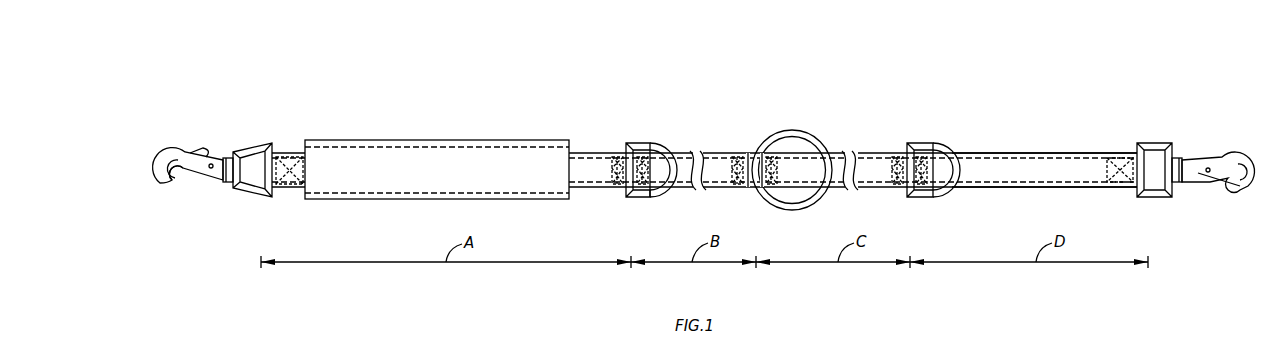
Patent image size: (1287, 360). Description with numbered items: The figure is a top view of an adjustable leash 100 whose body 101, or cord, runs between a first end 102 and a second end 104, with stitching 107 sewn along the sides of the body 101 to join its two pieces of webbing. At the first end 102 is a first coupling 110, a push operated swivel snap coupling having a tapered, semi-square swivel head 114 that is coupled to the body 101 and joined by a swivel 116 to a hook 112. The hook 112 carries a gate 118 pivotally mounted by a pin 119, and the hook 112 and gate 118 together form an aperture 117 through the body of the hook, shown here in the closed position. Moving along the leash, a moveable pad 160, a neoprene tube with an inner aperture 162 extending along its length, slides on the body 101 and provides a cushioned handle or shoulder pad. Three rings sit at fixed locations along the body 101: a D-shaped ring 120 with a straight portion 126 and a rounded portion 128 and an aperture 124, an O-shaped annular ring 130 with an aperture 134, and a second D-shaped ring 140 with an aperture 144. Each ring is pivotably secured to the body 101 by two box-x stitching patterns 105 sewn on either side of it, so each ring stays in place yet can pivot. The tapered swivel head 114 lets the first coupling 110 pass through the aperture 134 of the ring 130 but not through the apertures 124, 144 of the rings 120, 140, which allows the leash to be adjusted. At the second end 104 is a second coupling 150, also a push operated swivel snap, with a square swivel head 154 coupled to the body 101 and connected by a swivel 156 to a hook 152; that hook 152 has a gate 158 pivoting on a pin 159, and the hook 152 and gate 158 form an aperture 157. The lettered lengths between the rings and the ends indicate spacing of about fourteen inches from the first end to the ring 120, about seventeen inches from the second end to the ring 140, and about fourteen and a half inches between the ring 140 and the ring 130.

The adjustable leash 100 is at (1172, 62).
The body 101 is at (986, 197).
The first end 102 is at (270, 140).
The second end 104 is at (1140, 125).
The box-x stitching patterns 105 is at (291, 155).
The stitching 107 is at (1062, 152).
The first coupling 110 is at (234, 132).
The hook 112 is at (156, 186).
The tapered swivel head 114 is at (254, 197).
The swivel 116 is at (228, 184).
The aperture 117 is at (175, 165).
The gate 118 is at (205, 151).
The pin 119 is at (211, 163).
The ring 120 is at (641, 136).
The aperture 124 is at (656, 160).
The straight portion 126 is at (626, 190).
The rounded portion 128 is at (662, 191).
The ring 130 is at (791, 127).
The aperture 134 is at (790, 147).
The ring 140 is at (924, 136).
The aperture 144 is at (937, 160).
The second coupling 150 is at (1222, 135).
The hook 152 is at (1237, 156).
The square swivel head 154 is at (1155, 197).
The swivel 156 is at (1177, 157).
The aperture 157 is at (1218, 195).
The gate 158 is at (1236, 192).
The pin 159 is at (1196, 191).
The moveable pad 160 is at (445, 140).
The inner aperture 162 is at (368, 146).